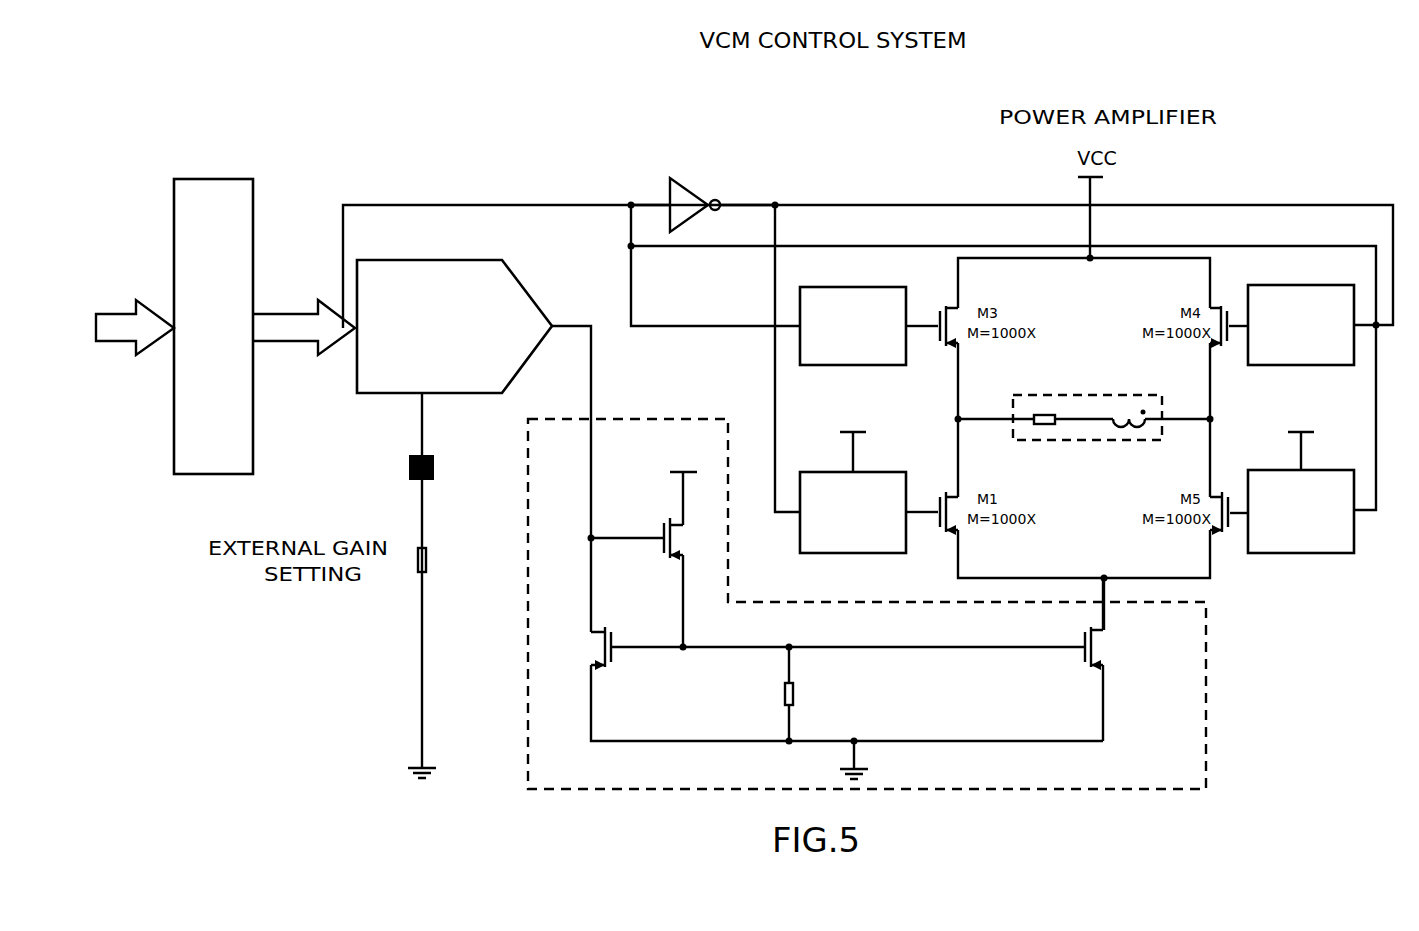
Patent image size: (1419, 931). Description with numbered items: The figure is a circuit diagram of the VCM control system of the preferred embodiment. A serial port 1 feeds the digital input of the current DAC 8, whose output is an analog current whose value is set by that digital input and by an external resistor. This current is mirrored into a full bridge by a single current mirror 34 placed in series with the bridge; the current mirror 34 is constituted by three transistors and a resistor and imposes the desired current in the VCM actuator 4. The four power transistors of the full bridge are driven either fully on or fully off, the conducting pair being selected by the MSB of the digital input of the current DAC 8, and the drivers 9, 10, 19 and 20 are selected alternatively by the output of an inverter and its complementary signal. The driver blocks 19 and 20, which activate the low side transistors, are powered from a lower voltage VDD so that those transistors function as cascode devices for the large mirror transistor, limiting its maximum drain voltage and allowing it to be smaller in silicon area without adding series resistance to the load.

The serial port 1 is at (253, 242).
The current DAC 8 is at (530, 295).
The driver 9 is at (867, 287).
The driver 10 is at (1325, 285).
The driver block 19 is at (823, 472).
The driver block 20 is at (1325, 553).
The VCM actuator 4 is at (1135, 395).
The current mirror 34 is at (1206, 756).